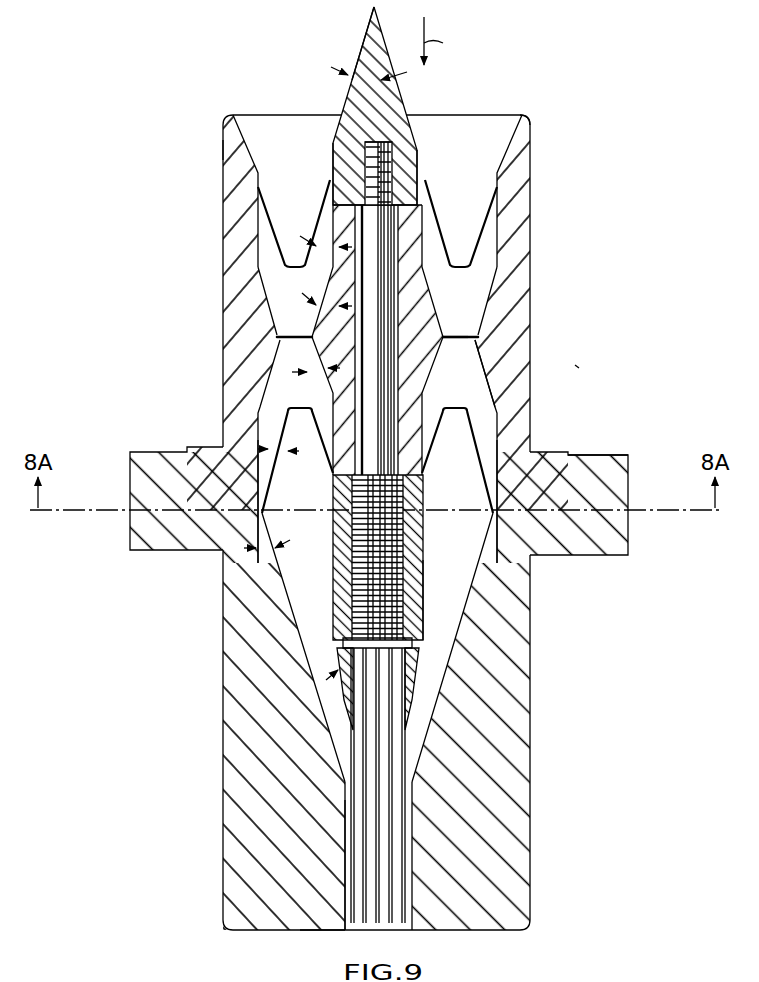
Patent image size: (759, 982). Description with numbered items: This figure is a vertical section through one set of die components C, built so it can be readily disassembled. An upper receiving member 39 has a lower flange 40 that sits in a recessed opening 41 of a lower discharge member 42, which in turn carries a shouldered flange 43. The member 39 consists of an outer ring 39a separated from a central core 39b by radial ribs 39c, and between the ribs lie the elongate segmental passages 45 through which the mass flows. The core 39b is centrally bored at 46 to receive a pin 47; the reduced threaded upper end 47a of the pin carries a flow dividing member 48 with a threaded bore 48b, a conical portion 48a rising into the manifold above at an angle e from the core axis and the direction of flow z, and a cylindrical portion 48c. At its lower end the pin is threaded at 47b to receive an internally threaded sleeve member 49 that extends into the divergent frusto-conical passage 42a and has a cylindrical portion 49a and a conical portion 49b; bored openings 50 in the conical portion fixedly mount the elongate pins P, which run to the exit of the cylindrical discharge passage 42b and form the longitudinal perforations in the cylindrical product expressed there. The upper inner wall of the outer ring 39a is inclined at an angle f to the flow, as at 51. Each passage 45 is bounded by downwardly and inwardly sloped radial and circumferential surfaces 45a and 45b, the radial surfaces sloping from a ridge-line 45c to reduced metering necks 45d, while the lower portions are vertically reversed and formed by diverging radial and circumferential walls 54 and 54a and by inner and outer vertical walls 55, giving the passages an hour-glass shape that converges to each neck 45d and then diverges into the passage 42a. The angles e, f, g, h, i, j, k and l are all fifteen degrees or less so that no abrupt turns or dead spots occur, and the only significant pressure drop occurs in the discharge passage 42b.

The upper receiving member 39 is at (534, 191).
The outer ring 39a is at (222, 120).
The core 39b is at (487, 168).
The radial ribs 39c is at (283, 307).
The lower flange 40 is at (560, 453).
The recessed opening 41 is at (572, 472).
The lower discharge member 42 is at (535, 883).
The divergent frusto-conical passage 42a is at (293, 612).
The cylindrical discharge passage 42b is at (340, 884).
The shouldered flange 43 is at (612, 508).
The segmental passages 45 is at (288, 340).
The radial sloped surfaces 45a is at (472, 312).
The circumferential sloped surfaces 45b is at (483, 284).
The radial ridge-line 45c is at (497, 243).
The reduced metering necks 45d is at (285, 322).
The central bore 46 is at (421, 227).
The pin 47 is at (389, 286).
The reduced threaded upper end 47a is at (388, 160).
The threaded lower end 47b is at (406, 538).
The flow dividing member 48 is at (393, 42).
The conical portion 48a is at (351, 77).
The threaded bore 48b is at (366, 176).
The cylindrical portion 48c is at (400, 193).
The internally threaded sleeve member 49 is at (427, 498).
The cylindrical portion 49a is at (422, 578).
The conical portion 49b is at (400, 674).
The bored openings 50 is at (396, 697).
The inclined upper inner wall 51 is at (534, 122).
The diverging radial walls 54 is at (283, 398).
The diverging circumferential walls 54a is at (283, 420).
The vertical walls 55 is at (425, 442).
The die components C is at (578, 366).
The elongate pins P is at (420, 763).
The direction of flow z is at (443, 41).
The angle e is at (360, 65).
The angle f is at (221, 150).
The angle g is at (317, 233).
The angle h is at (318, 292).
The angle i is at (309, 370).
The angle j is at (283, 452).
The angle k is at (275, 535).
The angle l is at (326, 680).